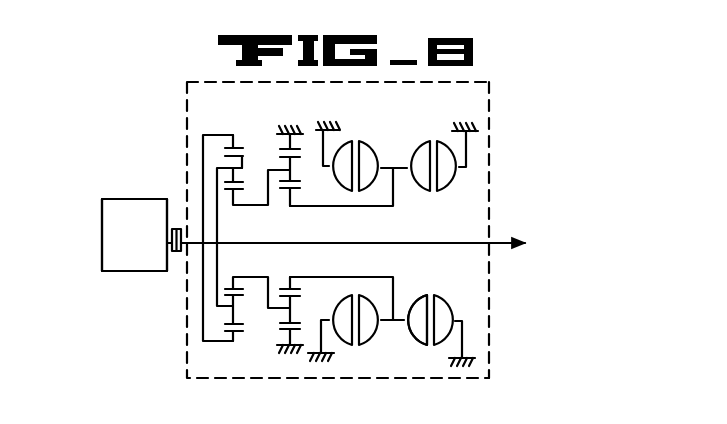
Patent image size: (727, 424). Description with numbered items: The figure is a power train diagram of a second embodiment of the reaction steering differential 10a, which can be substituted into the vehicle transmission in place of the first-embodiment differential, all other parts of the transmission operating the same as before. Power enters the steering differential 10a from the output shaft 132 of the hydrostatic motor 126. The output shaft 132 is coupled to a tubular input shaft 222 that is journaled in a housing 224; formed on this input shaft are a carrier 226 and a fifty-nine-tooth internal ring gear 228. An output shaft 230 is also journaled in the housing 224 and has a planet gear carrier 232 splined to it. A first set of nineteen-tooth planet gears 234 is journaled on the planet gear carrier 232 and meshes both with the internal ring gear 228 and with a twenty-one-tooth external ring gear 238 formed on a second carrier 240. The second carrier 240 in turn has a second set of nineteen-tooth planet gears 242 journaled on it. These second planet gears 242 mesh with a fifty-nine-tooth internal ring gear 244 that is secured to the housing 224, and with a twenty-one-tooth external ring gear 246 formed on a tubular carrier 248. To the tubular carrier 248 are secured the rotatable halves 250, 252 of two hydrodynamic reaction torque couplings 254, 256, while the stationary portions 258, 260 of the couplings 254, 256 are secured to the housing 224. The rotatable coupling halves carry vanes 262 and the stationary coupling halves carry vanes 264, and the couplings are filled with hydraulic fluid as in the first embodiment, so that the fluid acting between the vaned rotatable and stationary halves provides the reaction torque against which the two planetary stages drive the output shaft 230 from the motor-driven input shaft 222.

The reaction steering differential 10a is at (510, 112).
The housing 224 is at (186, 97).
The hydrostatic motor 126 is at (102, 215).
The output shaft 132 is at (167, 248).
The tubular input shaft 222 is at (200, 228).
The output shaft 230 is at (505, 242).
The carrier 226 is at (202, 157).
The planet gear carrier 232 is at (216, 289).
The internal ring gear 228 is at (238, 148).
The first set of planet gears 234 is at (249, 152).
The external ring gear 238 is at (226, 197).
The second carrier 240 is at (232, 284).
The second set of planet gears 242 is at (305, 203).
The external ring gear 246 is at (287, 283).
The tubular carrier 248 is at (380, 209).
The internal ring gear 244 is at (317, 124).
The rotatable half 250 is at (382, 140).
The rotatable half 252 is at (410, 150).
The stationary portion 258 is at (345, 345).
The hydrodynamic reaction torque coupling 254 is at (366, 352).
The vanes 264 is at (344, 294).
The vanes 262 is at (451, 258).
The hydrodynamic reaction torque coupling 256 is at (458, 315).
The stationary portion 260 is at (438, 348).